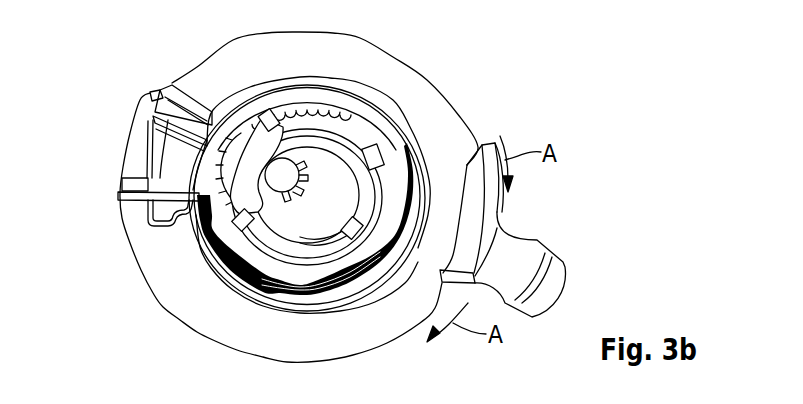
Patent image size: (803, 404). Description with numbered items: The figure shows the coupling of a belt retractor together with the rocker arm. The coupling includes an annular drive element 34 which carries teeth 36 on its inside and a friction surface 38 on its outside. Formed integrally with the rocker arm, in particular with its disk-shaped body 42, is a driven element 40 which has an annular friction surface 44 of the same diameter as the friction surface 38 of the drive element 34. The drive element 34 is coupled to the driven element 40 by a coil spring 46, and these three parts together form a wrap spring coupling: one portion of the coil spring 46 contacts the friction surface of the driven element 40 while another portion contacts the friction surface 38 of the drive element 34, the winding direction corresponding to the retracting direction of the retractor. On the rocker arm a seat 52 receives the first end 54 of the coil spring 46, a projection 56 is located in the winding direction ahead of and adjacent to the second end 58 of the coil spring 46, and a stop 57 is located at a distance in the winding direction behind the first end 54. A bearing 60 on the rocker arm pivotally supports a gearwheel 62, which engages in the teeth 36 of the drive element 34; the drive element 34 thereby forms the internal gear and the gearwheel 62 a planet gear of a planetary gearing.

The drive element 34 is at (377, 132).
The teeth 36 is at (298, 112).
The friction surface 38 is at (365, 198).
The driven element 40 is at (375, 195).
The disk-shaped body 42 is at (360, 333).
The annular friction surface 44 is at (407, 152).
The coil spring 46 is at (330, 285).
The seat 52 is at (170, 113).
The first end 54 is at (148, 119).
The projection 56 is at (123, 180).
The stop 57 is at (210, 113).
The second end 58 is at (118, 198).
The bearing 60 is at (247, 193).
The gearwheel 62 is at (287, 167).